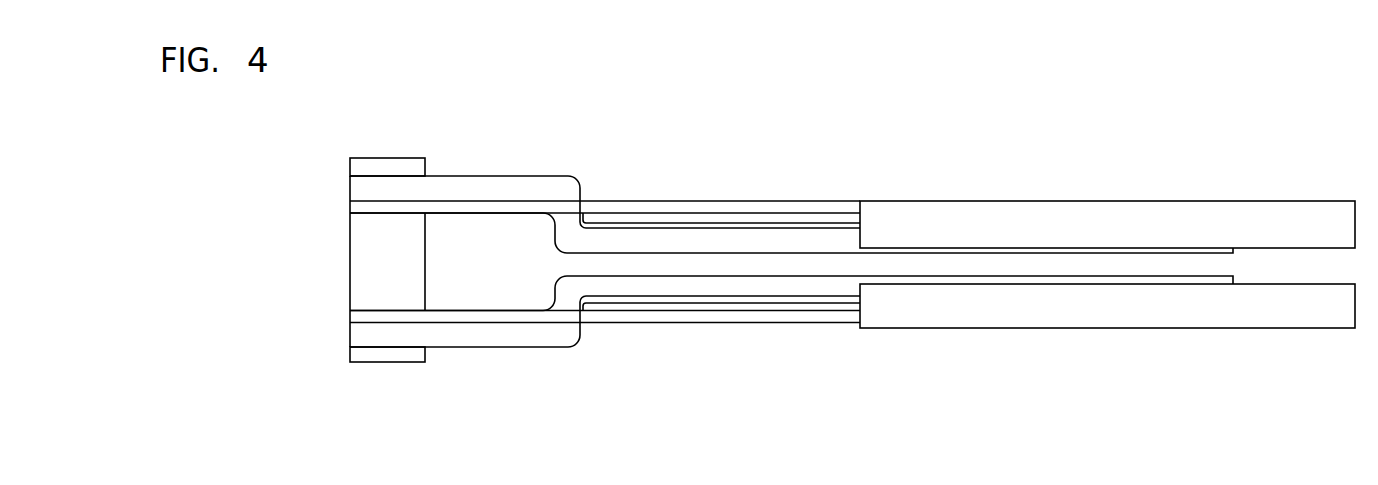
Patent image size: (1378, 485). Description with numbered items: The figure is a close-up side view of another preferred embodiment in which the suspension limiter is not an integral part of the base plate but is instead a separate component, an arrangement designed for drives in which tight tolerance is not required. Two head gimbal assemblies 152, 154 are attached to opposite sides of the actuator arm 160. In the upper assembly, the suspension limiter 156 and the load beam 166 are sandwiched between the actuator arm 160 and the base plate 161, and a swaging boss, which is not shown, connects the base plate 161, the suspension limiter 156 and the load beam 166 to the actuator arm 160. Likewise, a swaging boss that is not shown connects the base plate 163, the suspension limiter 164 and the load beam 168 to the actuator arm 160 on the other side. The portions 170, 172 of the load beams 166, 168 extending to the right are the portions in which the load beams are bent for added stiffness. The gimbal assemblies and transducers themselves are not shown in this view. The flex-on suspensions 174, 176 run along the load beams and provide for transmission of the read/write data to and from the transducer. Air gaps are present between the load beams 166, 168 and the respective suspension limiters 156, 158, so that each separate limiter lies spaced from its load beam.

The head gimbal assembly 152 is at (817, 200).
The head gimbal assembly 154 is at (727, 324).
The suspension limiter 156 is at (677, 238).
The suspension limiter 158 is at (670, 285).
The actuator arm 160 is at (388, 262).
The base plate 161 is at (399, 163).
The base plate 163 is at (393, 360).
The suspension limiter 164 is at (392, 330).
The load beam 166 is at (613, 206).
The load beam 168 is at (620, 316).
The portion of the load beam 170 is at (1030, 227).
The portion of the load beam 172 is at (1027, 312).
The flex-on suspension 174 is at (758, 217).
The flex-on suspension 176 is at (803, 307).